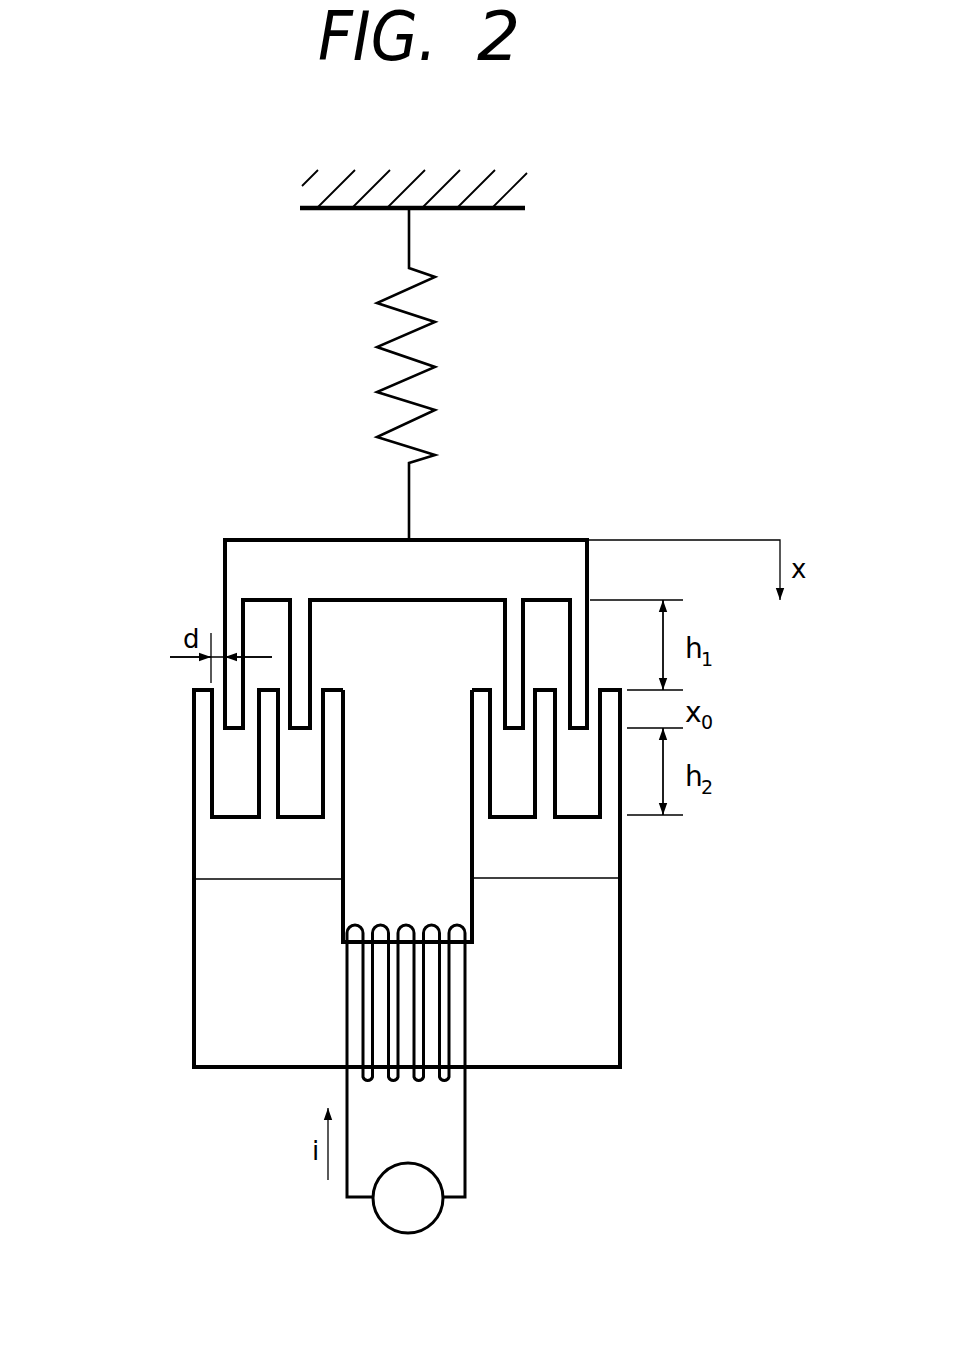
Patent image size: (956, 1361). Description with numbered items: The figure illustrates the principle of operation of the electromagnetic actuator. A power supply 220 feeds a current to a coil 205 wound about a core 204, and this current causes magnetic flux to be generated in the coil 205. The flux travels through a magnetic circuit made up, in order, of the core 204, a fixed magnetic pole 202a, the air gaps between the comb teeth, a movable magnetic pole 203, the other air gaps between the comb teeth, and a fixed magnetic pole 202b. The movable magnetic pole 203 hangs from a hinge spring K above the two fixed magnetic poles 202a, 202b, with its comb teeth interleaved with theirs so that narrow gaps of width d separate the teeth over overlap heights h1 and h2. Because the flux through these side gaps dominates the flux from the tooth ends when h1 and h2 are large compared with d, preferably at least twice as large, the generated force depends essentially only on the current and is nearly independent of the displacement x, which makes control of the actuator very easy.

The movable magnetic pole 203 is at (293, 557).
The fixed magnetic pole 202a is at (212, 858).
The fixed magnetic pole 202b is at (607, 857).
The core 204 is at (212, 978).
The coil 205 is at (455, 1043).
The power supply 220 is at (427, 1207).
The hinge spring K is at (423, 315).